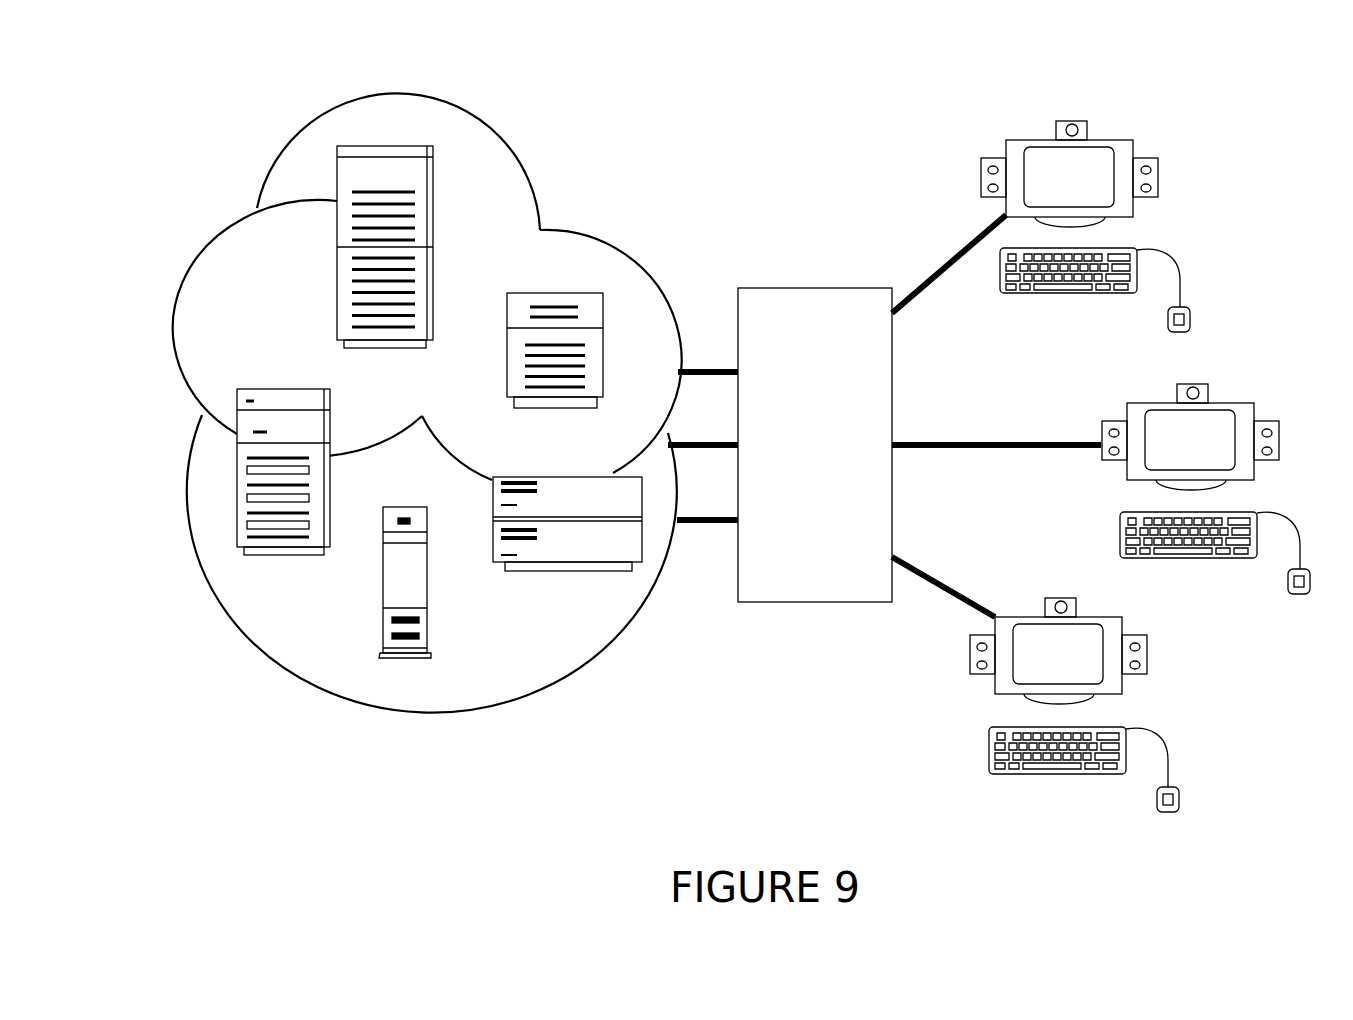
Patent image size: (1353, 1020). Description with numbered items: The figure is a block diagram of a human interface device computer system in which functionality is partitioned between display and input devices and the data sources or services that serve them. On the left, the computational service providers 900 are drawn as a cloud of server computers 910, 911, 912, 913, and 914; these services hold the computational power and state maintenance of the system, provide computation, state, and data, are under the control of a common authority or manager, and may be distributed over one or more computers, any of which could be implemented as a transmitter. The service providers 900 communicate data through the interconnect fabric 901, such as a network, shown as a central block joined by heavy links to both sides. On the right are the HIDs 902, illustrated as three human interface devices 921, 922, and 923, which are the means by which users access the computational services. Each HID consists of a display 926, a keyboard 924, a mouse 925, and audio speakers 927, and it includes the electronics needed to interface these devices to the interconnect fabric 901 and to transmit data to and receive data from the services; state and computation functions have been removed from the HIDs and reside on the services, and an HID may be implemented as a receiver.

The computational service providers 900 is at (675, 44).
The interconnect fabric 901 is at (790, 602).
The human interface devices 902 is at (1238, 40).
The computer 910 is at (433, 146).
The computer 911 is at (603, 293).
The computer 912 is at (642, 562).
The computer 913 is at (383, 655).
The computer 914 is at (237, 392).
The human interface device 921 is at (1119, 215).
The human interface device 922 is at (1232, 408).
The human interface device 923 is at (1121, 617).
The keyboard 924 is at (1035, 293).
The mouse 925 is at (1190, 316).
The display 926 is at (1026, 148).
The audio speakers 927 is at (1158, 178).